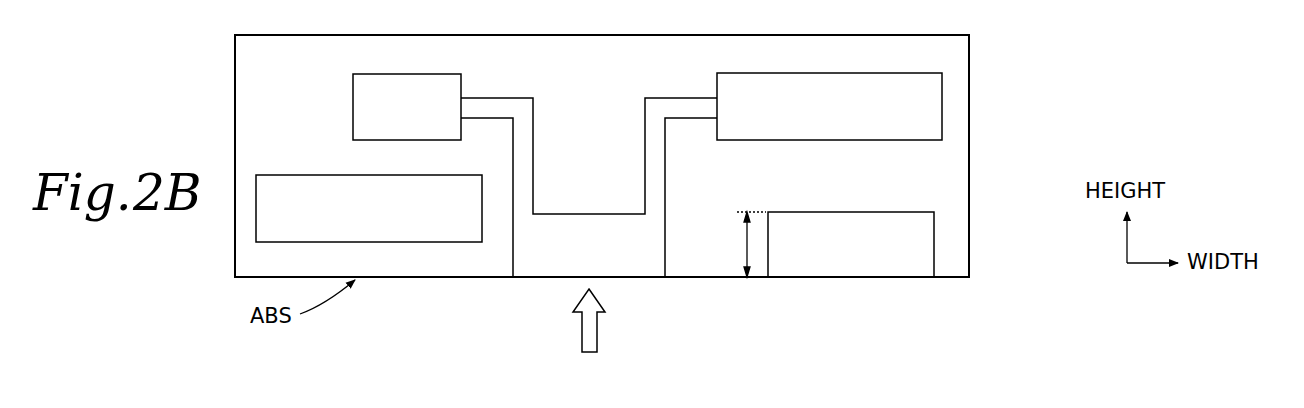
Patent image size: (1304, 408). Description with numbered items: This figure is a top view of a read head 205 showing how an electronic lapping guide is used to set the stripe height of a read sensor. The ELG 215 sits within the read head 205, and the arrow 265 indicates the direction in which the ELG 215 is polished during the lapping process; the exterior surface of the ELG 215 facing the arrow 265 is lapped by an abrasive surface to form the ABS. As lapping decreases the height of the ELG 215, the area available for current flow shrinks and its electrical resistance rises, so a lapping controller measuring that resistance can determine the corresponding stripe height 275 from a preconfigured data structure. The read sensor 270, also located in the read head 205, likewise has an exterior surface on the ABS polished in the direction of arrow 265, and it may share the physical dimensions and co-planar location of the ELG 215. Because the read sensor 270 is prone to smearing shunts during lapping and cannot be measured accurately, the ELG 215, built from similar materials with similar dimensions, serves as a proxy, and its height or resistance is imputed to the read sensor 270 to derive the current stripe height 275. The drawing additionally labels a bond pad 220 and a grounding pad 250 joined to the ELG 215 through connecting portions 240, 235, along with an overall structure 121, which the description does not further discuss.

The slider 121 is at (1024, 73).
The read head 205 is at (888, 35).
The bond pad 220 is at (860, 73).
The grounding pad 250 is at (297, 175).
The first trace segment 240 is at (495, 98).
The second trace segment 235 is at (687, 98).
The ELG 215 is at (578, 214).
The read sensor 270 is at (858, 212).
The stripe height 275 is at (745, 243).
The arrow 265 is at (597, 338).